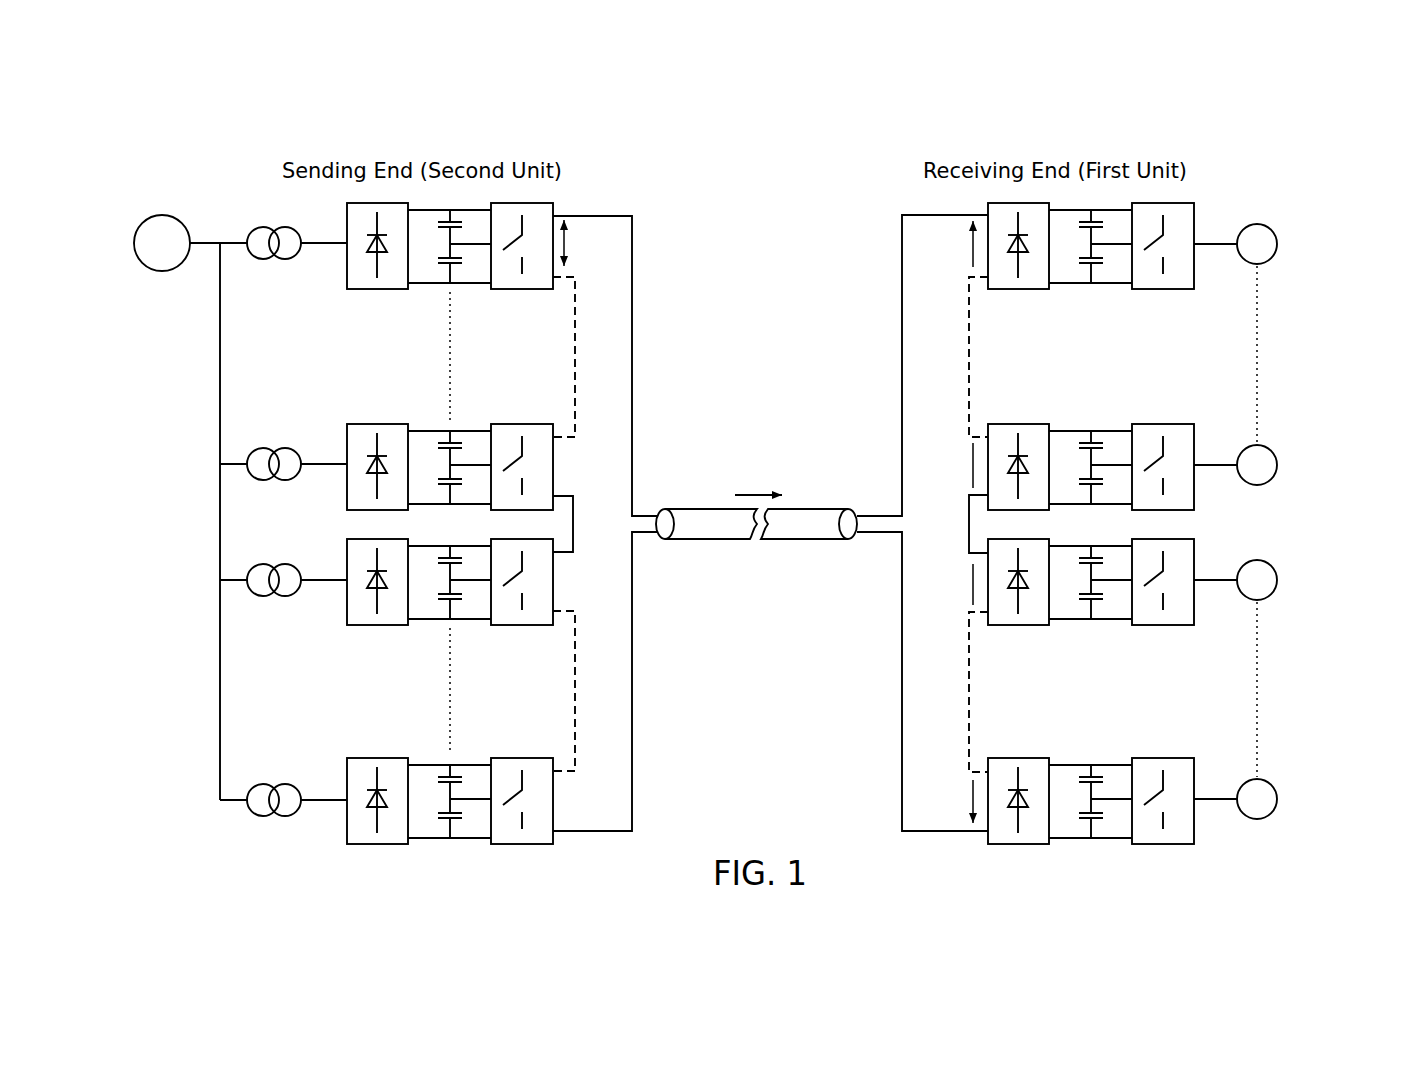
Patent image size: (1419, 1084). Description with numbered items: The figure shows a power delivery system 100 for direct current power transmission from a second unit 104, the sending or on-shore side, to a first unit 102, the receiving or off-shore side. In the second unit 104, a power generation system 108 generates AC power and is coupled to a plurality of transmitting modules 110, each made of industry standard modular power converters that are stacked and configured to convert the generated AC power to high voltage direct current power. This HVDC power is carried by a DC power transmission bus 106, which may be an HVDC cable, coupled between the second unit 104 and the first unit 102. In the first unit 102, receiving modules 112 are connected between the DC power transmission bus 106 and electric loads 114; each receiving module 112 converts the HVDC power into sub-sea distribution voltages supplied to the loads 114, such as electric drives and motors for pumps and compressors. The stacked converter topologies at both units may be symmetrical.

The power delivery system 100 is at (1293, 118).
The first unit 102 is at (1333, 342).
The second unit 104 is at (178, 378).
The DC power transmission bus 106 is at (695, 507).
The power generation system 108 is at (160, 216).
The transmitting module 110 is at (357, 300).
The receiving module 112 is at (1137, 308).
The electric load 114 is at (1277, 242).